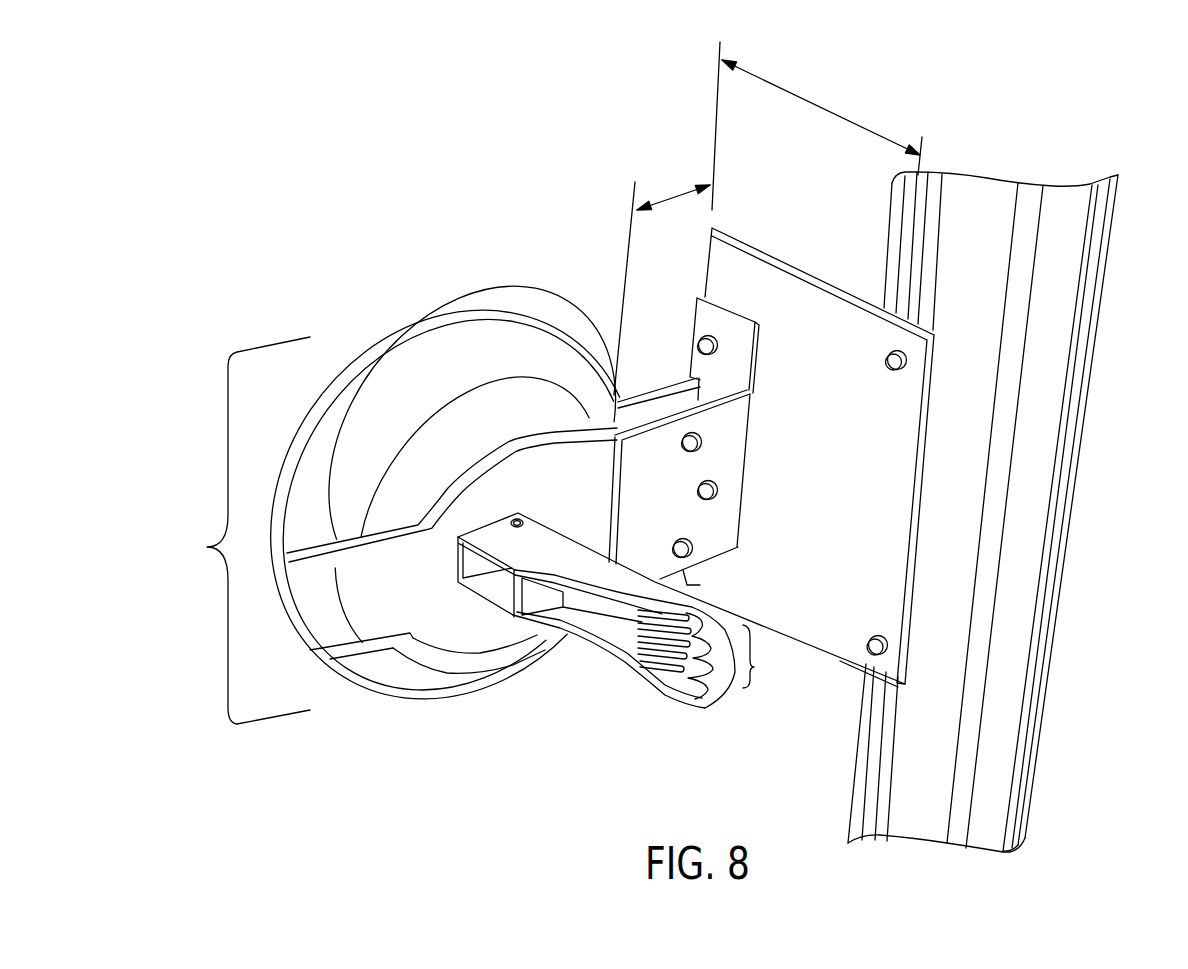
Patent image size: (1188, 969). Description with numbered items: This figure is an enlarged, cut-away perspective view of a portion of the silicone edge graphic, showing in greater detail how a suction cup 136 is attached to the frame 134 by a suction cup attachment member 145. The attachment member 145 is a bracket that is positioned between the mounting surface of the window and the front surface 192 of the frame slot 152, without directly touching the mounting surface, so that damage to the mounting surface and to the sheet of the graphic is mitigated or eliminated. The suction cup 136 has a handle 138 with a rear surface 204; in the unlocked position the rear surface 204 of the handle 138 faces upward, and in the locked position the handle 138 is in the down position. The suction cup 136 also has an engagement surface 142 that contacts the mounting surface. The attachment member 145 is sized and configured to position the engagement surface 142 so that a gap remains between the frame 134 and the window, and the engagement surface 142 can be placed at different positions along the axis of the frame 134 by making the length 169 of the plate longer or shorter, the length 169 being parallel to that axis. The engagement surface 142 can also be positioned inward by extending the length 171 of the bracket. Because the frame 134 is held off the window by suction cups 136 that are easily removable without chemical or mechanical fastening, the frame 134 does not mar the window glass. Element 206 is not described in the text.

The frame 134 is at (970, 190).
The suction cup 136 is at (239, 530).
The handle 138 is at (652, 639).
The engagement surface 142 is at (365, 350).
The suction cup attachment member 145 is at (700, 290).
The frame slot 152 is at (1060, 497).
The length 169 is at (827, 110).
The length 171 is at (680, 193).
The front surface 192 is at (1027, 793).
The rear surface 204 is at (513, 612).
The hub 206 is at (375, 612).